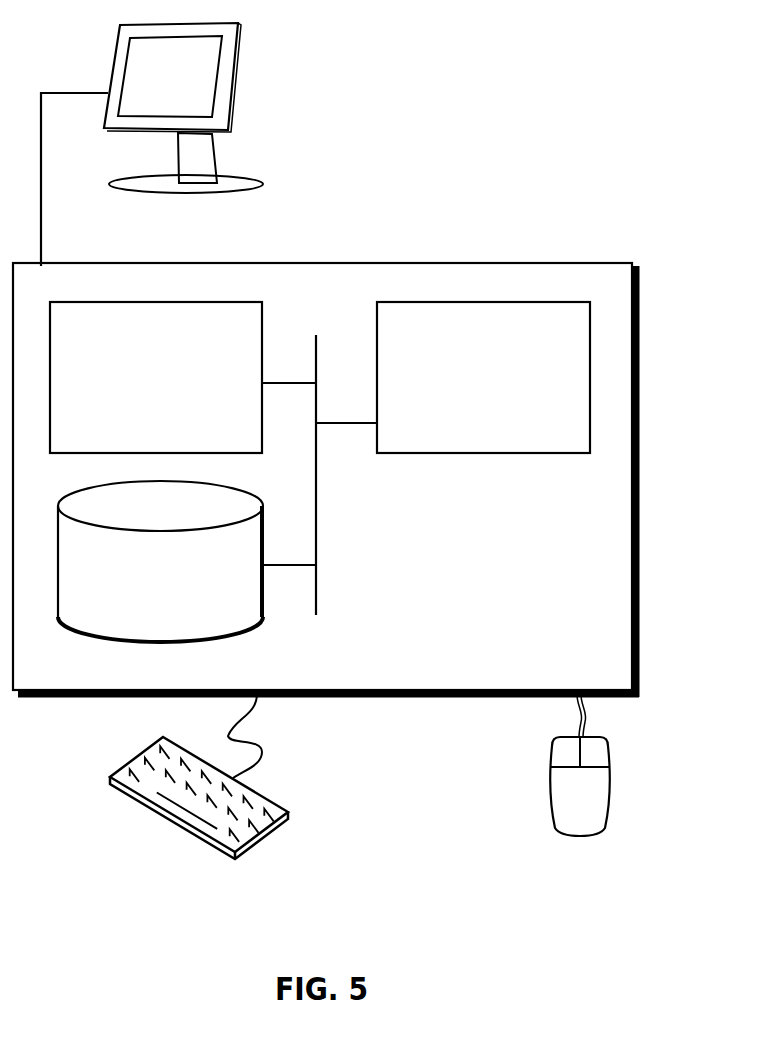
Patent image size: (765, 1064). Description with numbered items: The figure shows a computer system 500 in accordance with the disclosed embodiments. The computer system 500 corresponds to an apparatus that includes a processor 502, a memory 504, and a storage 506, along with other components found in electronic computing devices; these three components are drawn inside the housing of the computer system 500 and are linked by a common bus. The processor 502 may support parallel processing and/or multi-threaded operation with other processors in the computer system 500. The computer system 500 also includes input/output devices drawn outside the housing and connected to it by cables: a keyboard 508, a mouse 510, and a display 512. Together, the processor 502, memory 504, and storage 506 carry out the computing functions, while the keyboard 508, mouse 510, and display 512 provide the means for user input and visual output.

The computer system 500 is at (367, 245).
The processor 502 is at (466, 389).
The memory 504 is at (137, 389).
The storage 506 is at (142, 588).
The keyboard 508 is at (127, 796).
The mouse 510 is at (560, 806).
The display 512 is at (152, 144).